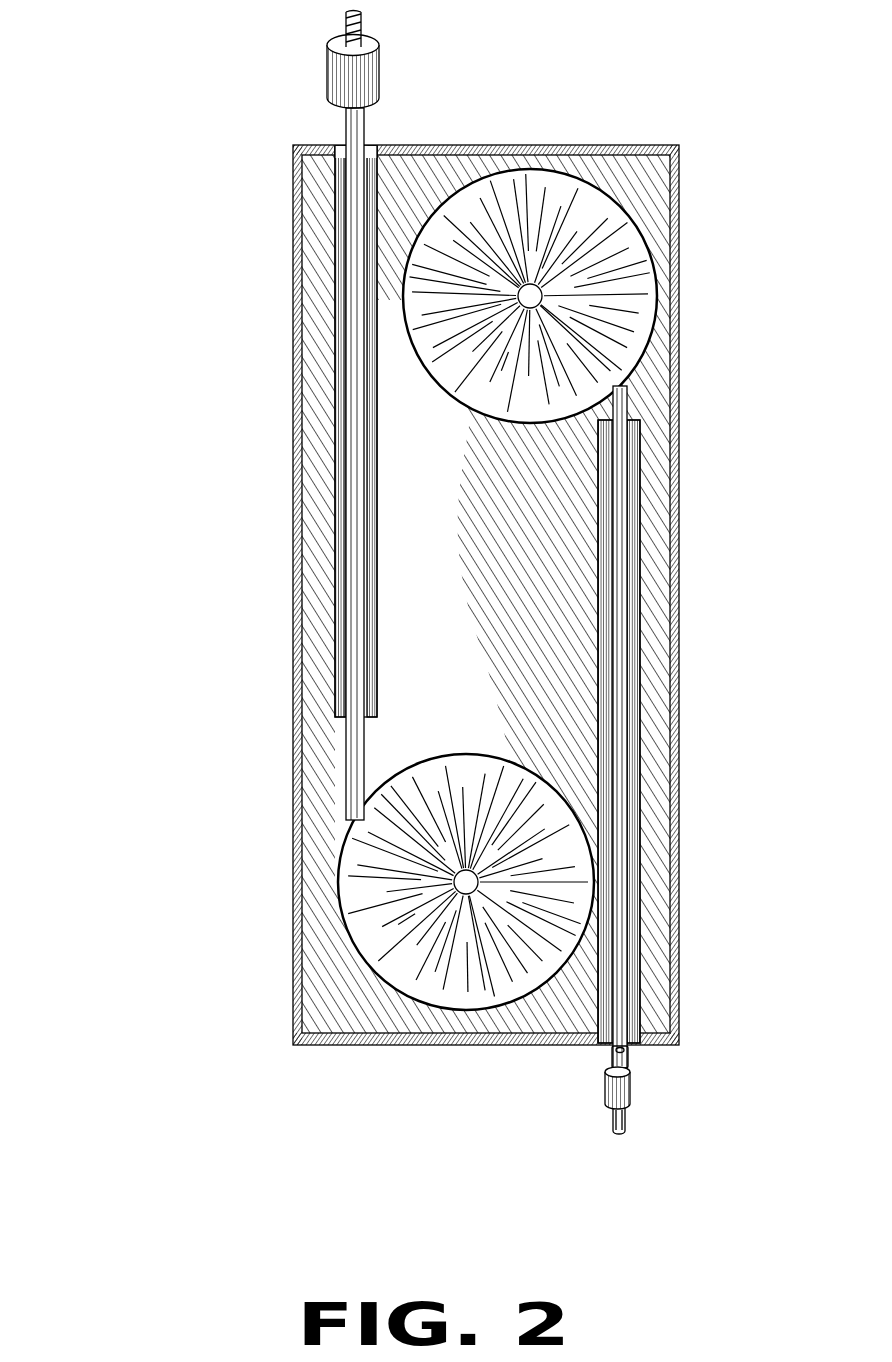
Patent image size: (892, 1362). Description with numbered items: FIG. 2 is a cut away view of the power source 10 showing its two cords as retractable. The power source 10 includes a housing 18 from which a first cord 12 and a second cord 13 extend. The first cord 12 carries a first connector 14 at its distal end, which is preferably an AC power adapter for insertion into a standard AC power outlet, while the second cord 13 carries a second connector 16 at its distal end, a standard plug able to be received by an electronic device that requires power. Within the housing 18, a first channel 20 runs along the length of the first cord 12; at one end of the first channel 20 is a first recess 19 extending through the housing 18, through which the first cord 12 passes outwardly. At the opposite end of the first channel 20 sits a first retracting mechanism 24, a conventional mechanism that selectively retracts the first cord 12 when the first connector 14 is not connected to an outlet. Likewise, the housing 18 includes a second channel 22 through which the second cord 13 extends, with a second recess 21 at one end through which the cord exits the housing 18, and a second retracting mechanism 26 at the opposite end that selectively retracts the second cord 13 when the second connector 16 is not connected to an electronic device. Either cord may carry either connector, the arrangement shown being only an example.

The power source 10 is at (421, 595).
The first cord 12 is at (347, 250).
The second cord 13 is at (627, 818).
The first connector 14 is at (380, 44).
The second connector 16 is at (632, 1095).
The housing 18 is at (676, 376).
The first recess 19 is at (603, 1048).
The first channel 20 is at (643, 712).
The second recess 21 is at (338, 148).
The second channel 22 is at (337, 376).
The first retracting mechanism 24 is at (640, 323).
The second retracting mechanism 26 is at (352, 891).